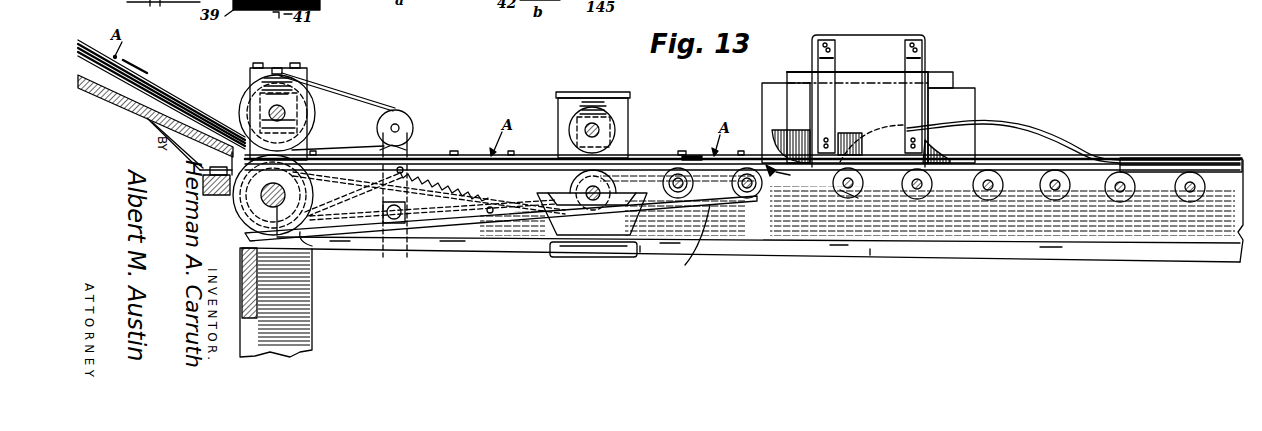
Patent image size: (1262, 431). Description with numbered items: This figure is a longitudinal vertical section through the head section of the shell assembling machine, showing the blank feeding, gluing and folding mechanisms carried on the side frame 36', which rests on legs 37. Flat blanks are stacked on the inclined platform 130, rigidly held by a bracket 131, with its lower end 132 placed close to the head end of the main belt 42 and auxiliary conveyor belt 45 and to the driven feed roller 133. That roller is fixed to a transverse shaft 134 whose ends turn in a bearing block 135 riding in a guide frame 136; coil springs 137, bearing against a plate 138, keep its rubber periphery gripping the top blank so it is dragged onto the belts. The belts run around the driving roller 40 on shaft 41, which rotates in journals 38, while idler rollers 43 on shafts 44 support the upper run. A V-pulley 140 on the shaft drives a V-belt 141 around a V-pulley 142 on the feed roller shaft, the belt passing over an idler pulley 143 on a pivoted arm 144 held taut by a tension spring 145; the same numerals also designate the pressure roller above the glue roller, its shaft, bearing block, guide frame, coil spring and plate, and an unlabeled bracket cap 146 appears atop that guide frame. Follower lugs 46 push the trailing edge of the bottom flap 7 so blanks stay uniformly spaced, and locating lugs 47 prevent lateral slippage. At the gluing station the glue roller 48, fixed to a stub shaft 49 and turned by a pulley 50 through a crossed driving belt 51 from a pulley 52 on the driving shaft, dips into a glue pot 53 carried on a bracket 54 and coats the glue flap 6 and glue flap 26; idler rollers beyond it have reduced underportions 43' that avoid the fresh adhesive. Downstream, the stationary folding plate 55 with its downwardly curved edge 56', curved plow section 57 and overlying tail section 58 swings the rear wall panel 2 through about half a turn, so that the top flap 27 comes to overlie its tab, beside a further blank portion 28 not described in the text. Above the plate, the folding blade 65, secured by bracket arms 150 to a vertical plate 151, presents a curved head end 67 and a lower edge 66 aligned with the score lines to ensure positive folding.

The inclined platform 130 is at (130, 107).
The bracket 131 is at (218, 100).
The lower end of the inclined platform 132 is at (230, 152).
The plate 138 is at (250, 73).
The V-pulley / bearing block 142 is at (250, 92).
The coil springs 137 is at (276, 69).
The feed roller 133 is at (312, 104).
The bearing block 135 is at (308, 112).
The transverse shaft 134 is at (300, 100).
The guide frame 136 is at (284, 108).
The V-belt / pressure roller shaft 141 is at (387, 98).
The idler pulley / guide frame 143 is at (400, 117).
The bracket cap 146 is at (563, 92).
The arm / coil spring 144 is at (395, 152).
The V-pulley / pressure roller 140 is at (241, 201).
The follower lugs 46 is at (315, 152).
The locating lugs 47 is at (463, 153).
The tension spring / plate 145 is at (427, 170).
The crossed driving belt 51 is at (422, 240).
The driving roller 40 is at (243, 216).
The pulley 52 is at (243, 229).
The transverse shaft 41 is at (277, 236).
The side frame 36' is at (760, 225).
The main belt 42 is at (397, 243).
The legs 37 is at (306, 311).
The journals 38 is at (304, 246).
The glue roller 48 is at (548, 212).
The stub shaft 49 is at (590, 212).
The bracket 54 is at (555, 253).
The glue pot 53 is at (614, 258).
The pulley 50 is at (598, 258).
The reduced-diameter underportions of idler rollers 43' is at (747, 224).
The idler rollers 43 is at (934, 196).
The shaft 44 is at (845, 188).
The auxiliary conveyor belt 45 is at (710, 210).
The downwardly curved edge 56' is at (779, 223).
The folding plate 55 is at (782, 173).
The bottom flap 7 is at (762, 94).
The rear wall panel 2 is at (857, 117).
The vertical plate 151 is at (877, 42).
The bracket arms 150 is at (818, 60).
The glue flap 6 is at (867, 75).
The glue flap 26 is at (953, 68).
The top flap 27 is at (960, 98).
The holder pad 28 is at (938, 131).
The head end of the blade 67 is at (786, 134).
The folding blade 65 is at (843, 138).
The lower edge of the blade 66 is at (860, 137).
The plow section 57 is at (1020, 128).
The tail section 58 is at (1176, 158).